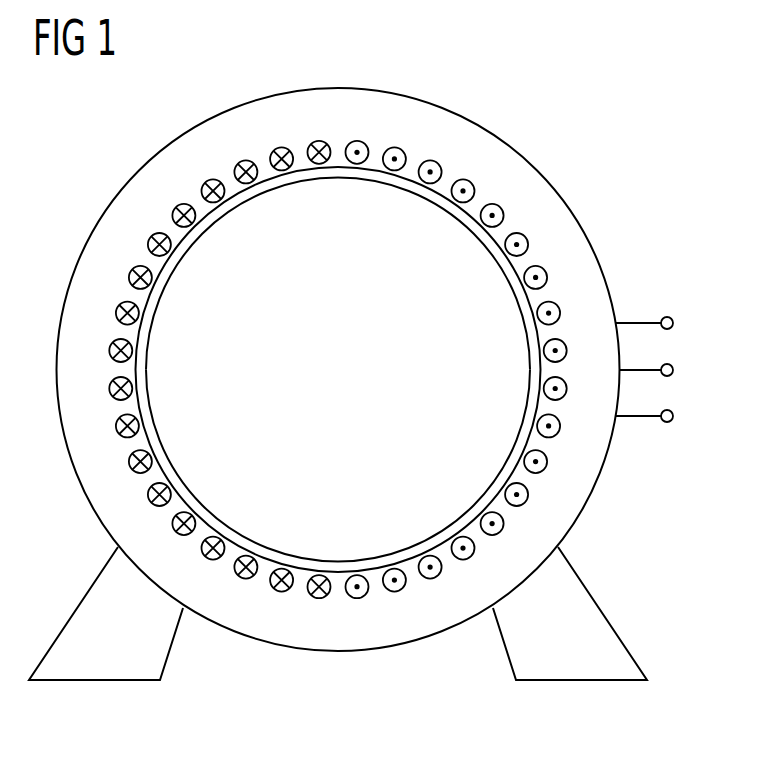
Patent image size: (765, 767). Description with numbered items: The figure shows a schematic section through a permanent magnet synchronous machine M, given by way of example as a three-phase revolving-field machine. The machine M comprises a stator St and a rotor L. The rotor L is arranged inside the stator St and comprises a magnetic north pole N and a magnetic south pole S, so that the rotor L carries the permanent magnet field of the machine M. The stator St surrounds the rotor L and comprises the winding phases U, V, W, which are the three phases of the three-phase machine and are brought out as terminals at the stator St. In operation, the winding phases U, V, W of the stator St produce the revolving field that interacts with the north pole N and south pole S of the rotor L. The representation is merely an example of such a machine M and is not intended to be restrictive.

The permanent magnet synchronous machine M is at (367, 357).
The stator St is at (345, 97).
The rotor L is at (408, 203).
The south pole S is at (338, 274).
The north pole N is at (338, 466).
The winding phase U is at (657, 323).
The winding phase V is at (659, 370).
The winding phase W is at (660, 417).